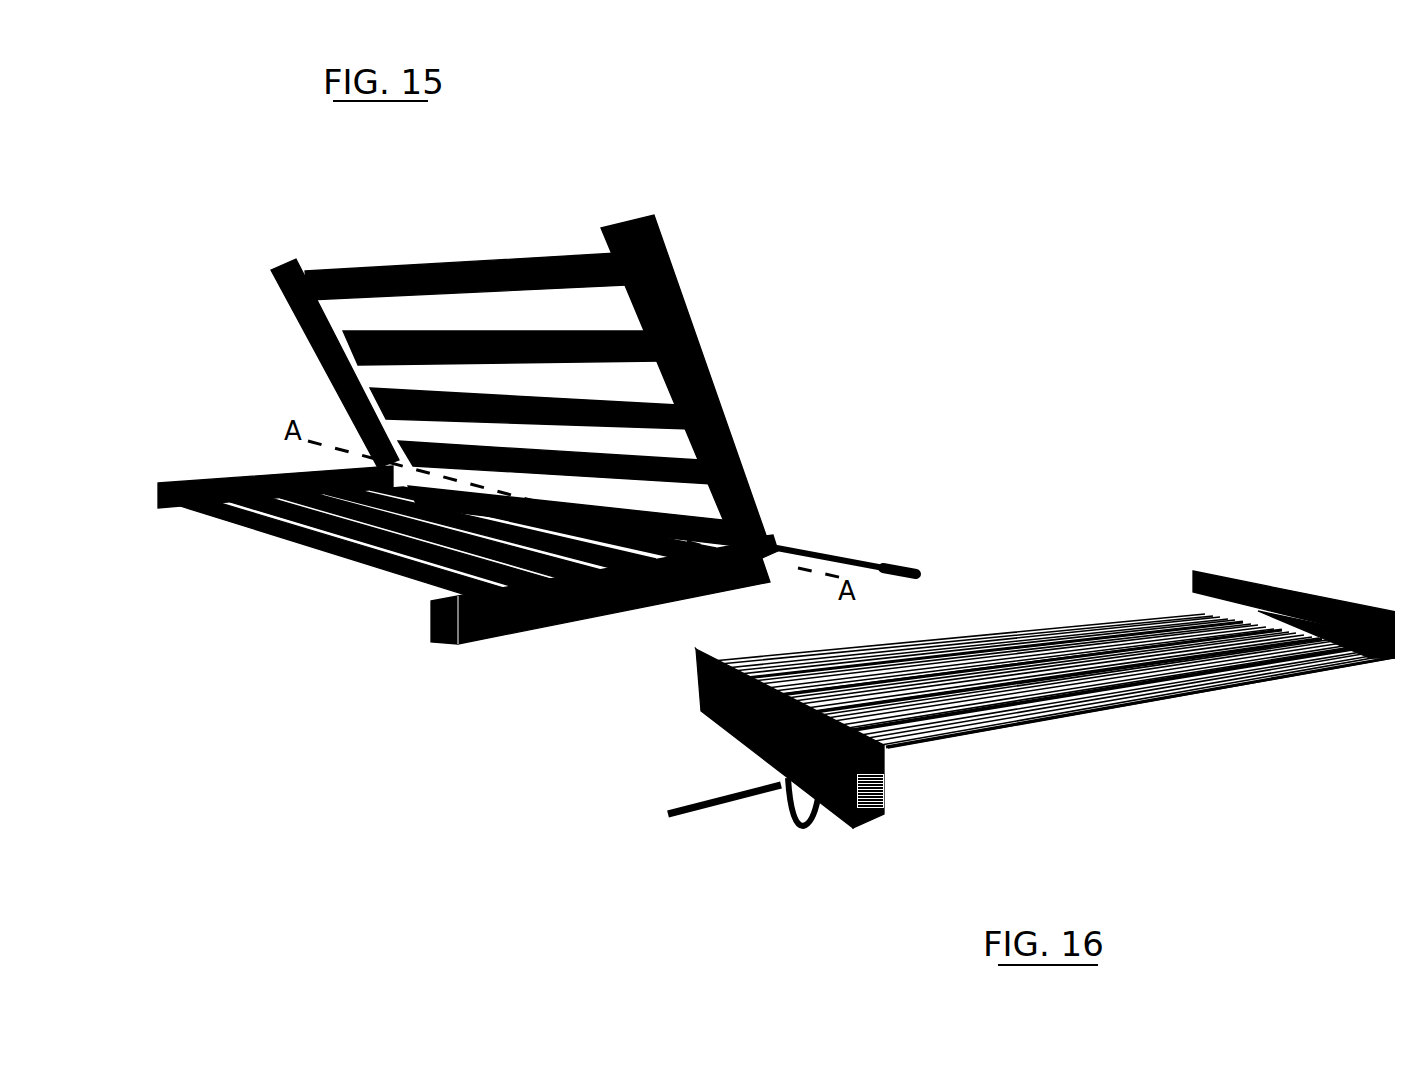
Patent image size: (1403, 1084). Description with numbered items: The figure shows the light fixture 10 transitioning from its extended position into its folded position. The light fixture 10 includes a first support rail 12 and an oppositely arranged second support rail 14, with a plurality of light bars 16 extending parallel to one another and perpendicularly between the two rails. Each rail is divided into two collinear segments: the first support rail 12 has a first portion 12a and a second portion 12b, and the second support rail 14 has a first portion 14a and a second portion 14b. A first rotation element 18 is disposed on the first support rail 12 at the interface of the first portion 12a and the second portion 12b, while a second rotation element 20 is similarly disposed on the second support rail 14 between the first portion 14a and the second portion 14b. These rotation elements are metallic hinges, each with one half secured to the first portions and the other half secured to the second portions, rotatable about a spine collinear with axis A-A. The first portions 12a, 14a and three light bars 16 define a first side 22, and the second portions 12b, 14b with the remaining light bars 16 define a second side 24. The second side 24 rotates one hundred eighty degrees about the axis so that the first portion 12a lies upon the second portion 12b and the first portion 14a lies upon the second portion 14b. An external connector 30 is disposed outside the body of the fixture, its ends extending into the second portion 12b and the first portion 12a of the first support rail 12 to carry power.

In FIG. 15, the light fixture 10 is at (632, 100).
In FIG. 16, the light fixture 10 is at (1288, 865).
In FIG. 15, the first support rail 12 is at (673, 432).
In FIG. 16, the first support rail 12 is at (802, 762).
In FIG. 15, the first portion of the first support rail 12a is at (547, 622).
In FIG. 16, the first portion of the first support rail 12a is at (700, 712).
In FIG. 15, the second portion of the first support rail 12b is at (690, 305).
In FIG. 16, the second portion of the first support rail 12b is at (722, 650).
In FIG. 15, the second support rail 14 is at (278, 354).
In FIG. 16, the second support rail 14 is at (1294, 626).
In FIG. 15, the first portion of the second support rail 14a is at (240, 482).
In FIG. 16, the first portion of the second support rail 14a is at (1330, 657).
In FIG. 15, the second portion of the second support rail 14b is at (292, 338).
In FIG. 16, the second portion of the second support rail 14b is at (1235, 565).
In FIG. 15, the light bar 16 is at (555, 395).
In FIG. 16, the light bar 16 is at (1205, 680).
In FIG. 15, the first rotation element 18 is at (770, 560).
In FIG. 16, the first rotation element 18 is at (882, 786).
In FIG. 16, the second rotation element 20 is at (1398, 656).
In FIG. 15, the first side 22 is at (300, 588).
In FIG. 16, the first side 22 is at (1080, 732).
In FIG. 15, the second side 24 is at (521, 369).
In FIG. 16, the second side 24 is at (1054, 674).
In FIG. 15, the external connector 30 is at (800, 540).
In FIG. 16, the external connector 30 is at (770, 806).